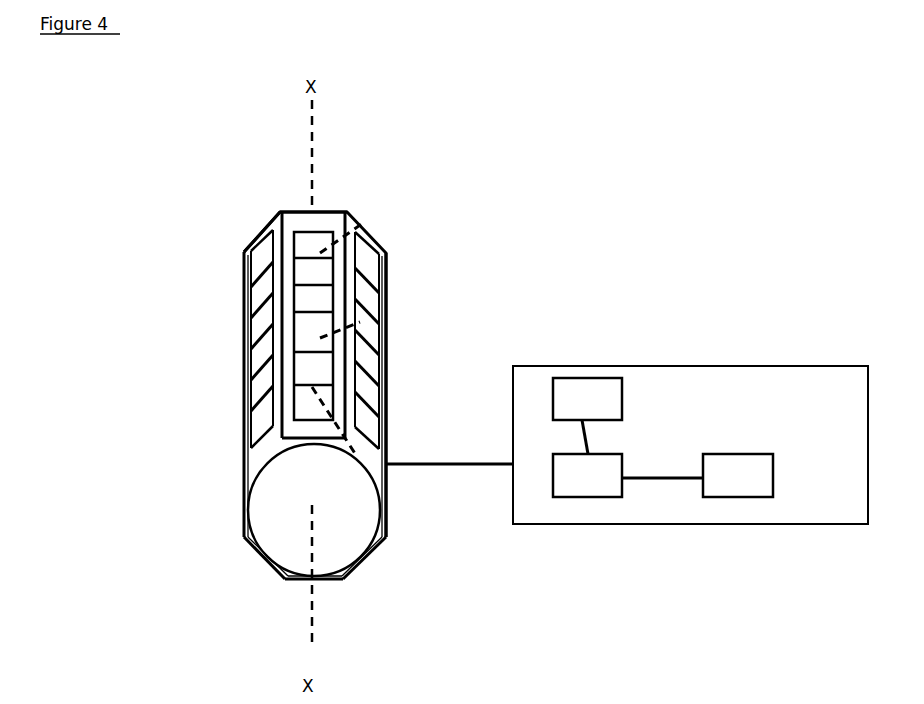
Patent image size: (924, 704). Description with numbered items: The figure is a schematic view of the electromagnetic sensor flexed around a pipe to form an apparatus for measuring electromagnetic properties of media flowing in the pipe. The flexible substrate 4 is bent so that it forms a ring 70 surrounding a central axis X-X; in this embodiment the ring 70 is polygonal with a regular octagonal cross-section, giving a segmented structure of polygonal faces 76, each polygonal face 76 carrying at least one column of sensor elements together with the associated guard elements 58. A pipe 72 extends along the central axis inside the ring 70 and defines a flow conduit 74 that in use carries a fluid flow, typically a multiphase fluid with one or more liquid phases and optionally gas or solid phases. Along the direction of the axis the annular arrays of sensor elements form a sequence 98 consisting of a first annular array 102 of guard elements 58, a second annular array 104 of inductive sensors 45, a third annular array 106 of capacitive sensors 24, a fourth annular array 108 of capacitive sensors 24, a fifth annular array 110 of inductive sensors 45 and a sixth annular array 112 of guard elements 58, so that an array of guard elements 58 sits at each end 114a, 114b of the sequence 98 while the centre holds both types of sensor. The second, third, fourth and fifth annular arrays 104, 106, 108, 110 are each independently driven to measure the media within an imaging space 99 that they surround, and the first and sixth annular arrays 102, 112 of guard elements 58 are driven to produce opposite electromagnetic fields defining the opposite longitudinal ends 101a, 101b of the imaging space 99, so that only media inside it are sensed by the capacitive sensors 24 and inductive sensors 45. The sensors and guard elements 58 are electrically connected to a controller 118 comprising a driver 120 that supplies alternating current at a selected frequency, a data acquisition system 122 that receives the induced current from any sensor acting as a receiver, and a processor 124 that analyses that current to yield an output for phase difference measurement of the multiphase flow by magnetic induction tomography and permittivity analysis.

The substrate 4 is at (267, 560).
The capacitive sensors 24 is at (362, 322).
The inductive sensors 45 is at (363, 302).
The guard elements 58 is at (386, 254).
The ring 70 is at (282, 580).
The pipe 72 is at (348, 563).
The flow conduit 74 is at (355, 525).
The polygonal face 76 is at (263, 452).
The sequence 98 is at (262, 228).
The imaging space 99 is at (386, 316).
The longitudinal end of the imaging space 101a is at (363, 223).
The longitudinal end of the imaging space 101b is at (353, 450).
The first annular array 102 is at (243, 248).
The second annular array 104 is at (246, 293).
The third annular array 106 is at (263, 324).
The fourth annular array 108 is at (262, 360).
The fifth annular array 110 is at (262, 398).
The sixth annular array 112 is at (262, 433).
The end of the sequence 114a is at (258, 235).
The end of the sequence 114b is at (262, 446).
The controller 118 is at (538, 366).
The driver 120 is at (595, 384).
The data acquisition system 122 is at (622, 460).
The processor 124 is at (742, 454).